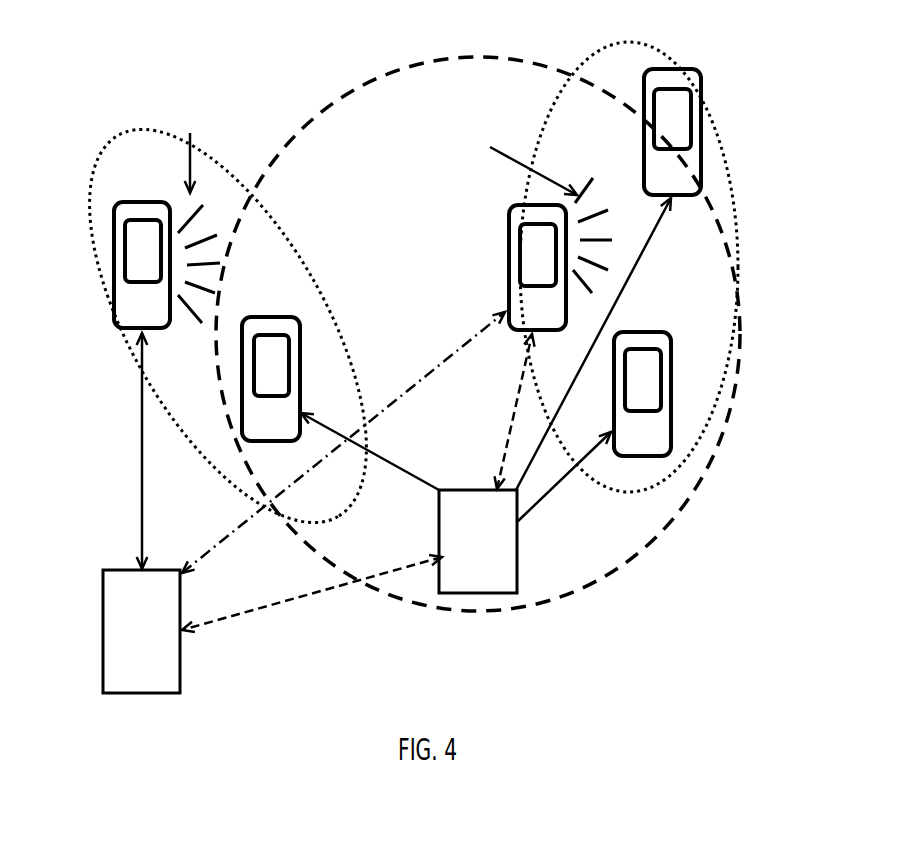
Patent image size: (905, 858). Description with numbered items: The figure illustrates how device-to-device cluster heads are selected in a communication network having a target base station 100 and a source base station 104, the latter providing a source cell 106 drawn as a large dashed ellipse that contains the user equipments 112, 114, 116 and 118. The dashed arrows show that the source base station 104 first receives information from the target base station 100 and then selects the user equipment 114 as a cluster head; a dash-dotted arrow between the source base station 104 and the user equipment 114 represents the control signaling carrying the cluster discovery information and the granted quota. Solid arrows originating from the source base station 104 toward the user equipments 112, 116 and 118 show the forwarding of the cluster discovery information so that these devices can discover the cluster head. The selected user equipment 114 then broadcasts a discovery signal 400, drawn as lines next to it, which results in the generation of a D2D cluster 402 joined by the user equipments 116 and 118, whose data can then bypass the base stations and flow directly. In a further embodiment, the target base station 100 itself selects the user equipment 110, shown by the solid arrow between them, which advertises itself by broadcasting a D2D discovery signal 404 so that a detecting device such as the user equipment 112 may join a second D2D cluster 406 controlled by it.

The target base station 100 is at (117, 631).
The source base station 104 is at (453, 541).
The source cell 106 is at (478, 334).
The user equipment 110 is at (141, 265).
The user equipment 112 is at (293, 379).
The user equipment 114 is at (534, 254).
The user equipment 116 is at (663, 392).
The user equipment 118 is at (649, 132).
The discovery signal 400 is at (518, 160).
The D2D cluster 402 is at (658, 267).
The D2D discovery signal 404 is at (192, 146).
The D2D cluster 406 is at (228, 326).